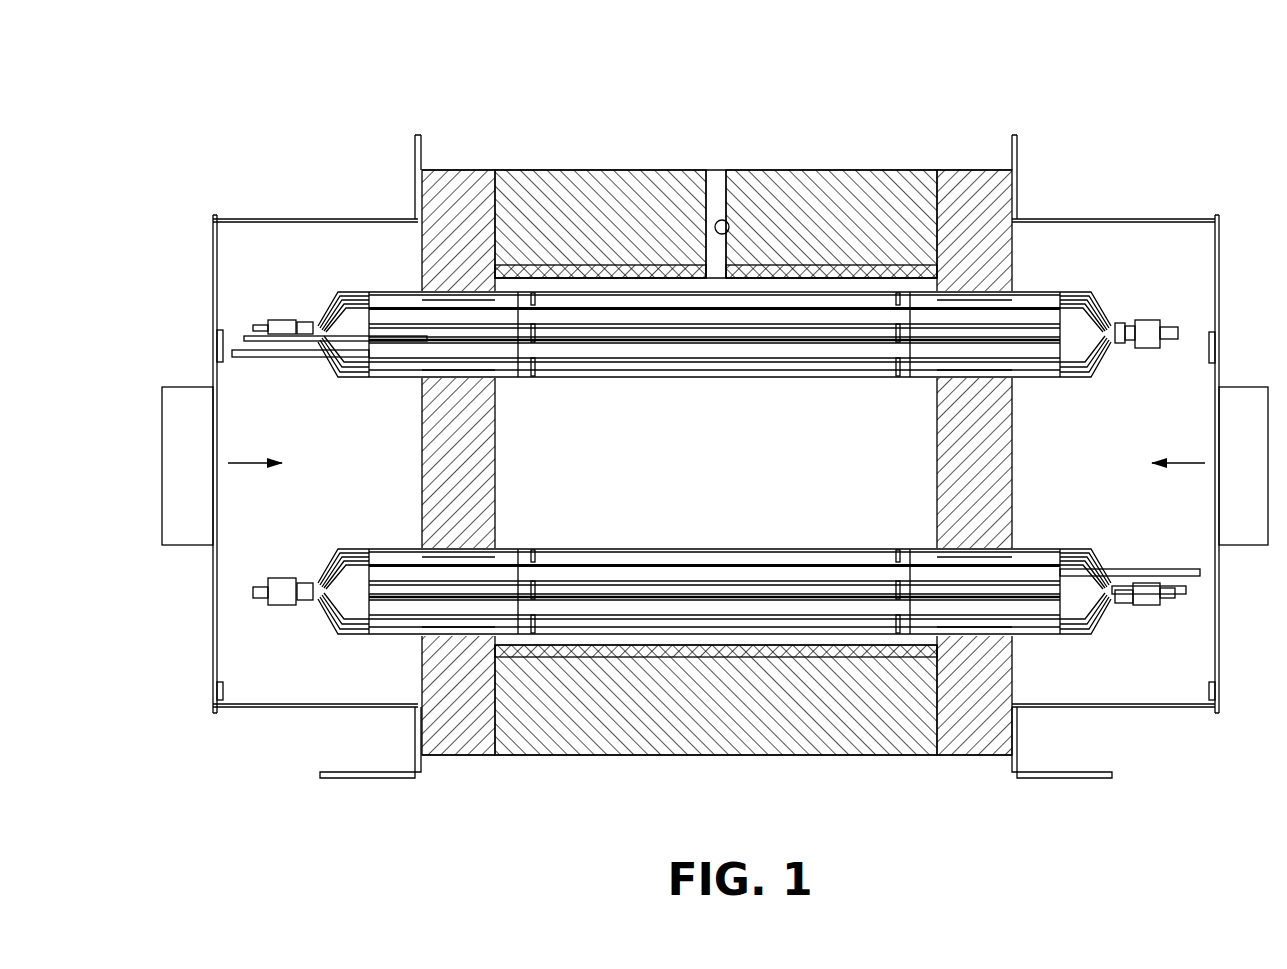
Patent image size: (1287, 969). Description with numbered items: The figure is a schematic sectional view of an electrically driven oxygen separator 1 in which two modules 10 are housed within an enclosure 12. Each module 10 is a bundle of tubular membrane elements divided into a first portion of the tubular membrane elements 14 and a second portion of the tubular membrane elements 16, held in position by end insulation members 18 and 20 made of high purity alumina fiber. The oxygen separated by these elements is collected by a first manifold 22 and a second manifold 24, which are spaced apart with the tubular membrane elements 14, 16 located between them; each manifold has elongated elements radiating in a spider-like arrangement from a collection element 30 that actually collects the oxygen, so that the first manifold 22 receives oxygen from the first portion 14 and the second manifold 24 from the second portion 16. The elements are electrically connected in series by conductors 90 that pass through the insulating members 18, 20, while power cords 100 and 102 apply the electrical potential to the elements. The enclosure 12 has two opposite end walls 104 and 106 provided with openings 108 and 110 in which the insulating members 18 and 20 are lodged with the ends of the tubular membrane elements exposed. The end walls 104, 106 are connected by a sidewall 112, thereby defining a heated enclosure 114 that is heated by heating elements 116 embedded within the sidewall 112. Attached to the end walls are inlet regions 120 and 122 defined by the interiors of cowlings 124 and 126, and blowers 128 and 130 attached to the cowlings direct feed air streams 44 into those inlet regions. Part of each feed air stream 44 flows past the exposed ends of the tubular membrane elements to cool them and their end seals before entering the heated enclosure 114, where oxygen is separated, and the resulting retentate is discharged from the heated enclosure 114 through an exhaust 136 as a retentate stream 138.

The electrically driven oxygen separator 1 is at (443, 92).
The module 10 is at (645, 400).
The enclosure 12 is at (615, 143).
The first portion of the tubular membrane elements 14 is at (752, 366).
The second portion of the tubular membrane elements 16 is at (842, 370).
The end insulation member 18 is at (1005, 323).
The end insulation member 20 is at (430, 345).
The first manifold 22 is at (1092, 385).
The second manifold 24 is at (357, 386).
The collection element 30 is at (282, 323).
The feed air stream 44 is at (250, 462).
The conductor 90 is at (537, 366).
The power cord 100 is at (313, 342).
The power cord 102 is at (262, 352).
The end wall 104 is at (457, 470).
The end wall 106 is at (975, 436).
The opening 108 is at (470, 375).
The opening 110 is at (990, 375).
The sidewall 112 is at (585, 758).
The heated enclosure 114 is at (792, 511).
The heating element 116 is at (716, 656).
The inlet region 120 is at (322, 511).
The inlet region 122 is at (1115, 398).
The cowling 124 is at (288, 228).
The cowling 126 is at (1146, 228).
The blower 128 is at (181, 420).
The blower 130 is at (1243, 420).
The exhaust 136 is at (732, 222).
The retentate stream 138 is at (716, 160).